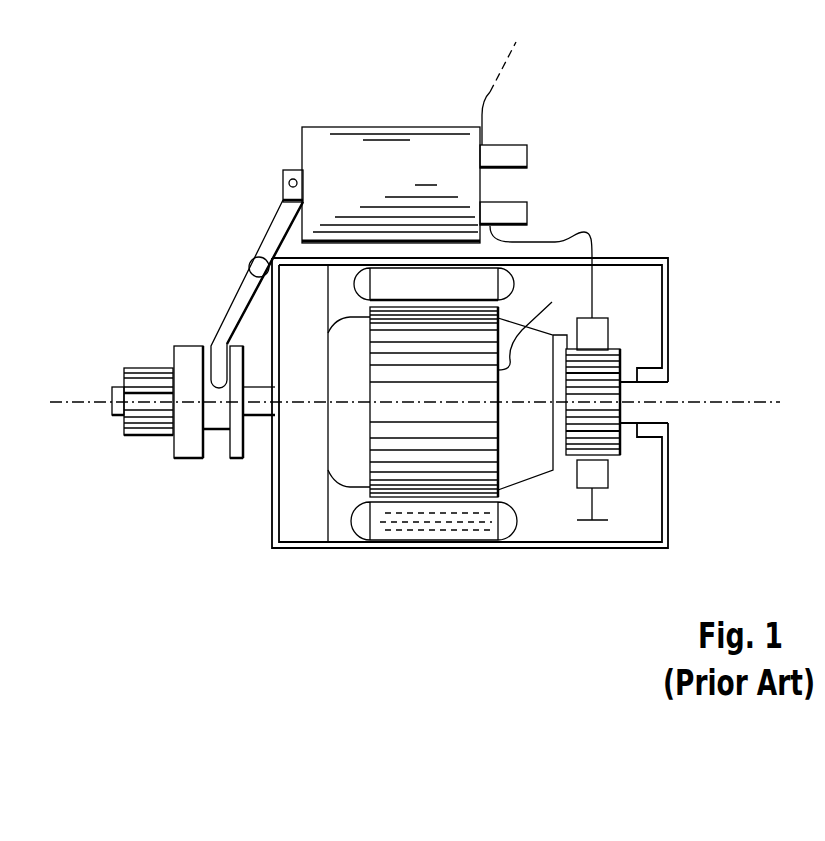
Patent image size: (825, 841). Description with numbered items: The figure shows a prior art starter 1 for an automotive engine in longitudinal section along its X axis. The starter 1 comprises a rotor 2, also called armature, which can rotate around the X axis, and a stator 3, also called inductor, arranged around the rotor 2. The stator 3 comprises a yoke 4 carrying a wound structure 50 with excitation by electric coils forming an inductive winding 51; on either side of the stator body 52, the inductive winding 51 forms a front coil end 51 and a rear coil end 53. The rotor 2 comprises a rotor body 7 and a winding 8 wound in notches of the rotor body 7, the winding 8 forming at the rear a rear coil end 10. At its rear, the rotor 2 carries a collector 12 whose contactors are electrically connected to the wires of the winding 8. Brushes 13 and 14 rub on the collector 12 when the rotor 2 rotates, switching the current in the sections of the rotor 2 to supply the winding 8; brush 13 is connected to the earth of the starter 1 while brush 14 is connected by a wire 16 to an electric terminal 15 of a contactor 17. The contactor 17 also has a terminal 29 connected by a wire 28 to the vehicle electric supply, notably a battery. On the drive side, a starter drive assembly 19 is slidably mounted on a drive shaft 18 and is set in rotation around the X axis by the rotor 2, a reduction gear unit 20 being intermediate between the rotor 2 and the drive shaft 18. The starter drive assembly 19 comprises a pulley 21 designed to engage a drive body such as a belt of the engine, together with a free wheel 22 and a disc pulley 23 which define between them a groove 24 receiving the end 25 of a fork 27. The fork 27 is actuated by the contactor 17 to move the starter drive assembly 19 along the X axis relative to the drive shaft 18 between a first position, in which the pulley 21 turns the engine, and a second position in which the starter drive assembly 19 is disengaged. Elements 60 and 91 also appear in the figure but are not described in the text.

The starter 1 is at (635, 567).
The rotor 2 is at (512, 507).
The stator 3 is at (413, 550).
The yoke 4 is at (443, 537).
The rotor body 7 is at (530, 332).
The winding 8 is at (548, 460).
The rear coil end 10 is at (530, 462).
The collector 12 is at (622, 370).
The brush 13 is at (606, 470).
The brush 14 is at (612, 332).
The electric terminal 15 is at (538, 215).
The wire 16 is at (596, 240).
The contactor 17 is at (390, 148).
The drive shaft 18 is at (116, 385).
The starter drive assembly 19 is at (178, 480).
The reduction gear unit 20 is at (302, 507).
The pulley 21 is at (148, 366).
The free wheel 22 is at (187, 342).
The disc pulley 23 is at (236, 460).
The groove 24 is at (222, 440).
The end of fork 25 is at (215, 358).
The fork 27 is at (268, 222).
The wire 28 is at (480, 100).
The terminal 29 is at (535, 150).
The wound structure 50 is at (490, 548).
The inductive winding 51 is at (357, 530).
The stator body 52 is at (552, 236).
The rear coil end 53 is at (508, 522).
The permanent magnet 60 is at (520, 296).
The partition wall 91 is at (352, 500).
The X axis X is at (742, 405).